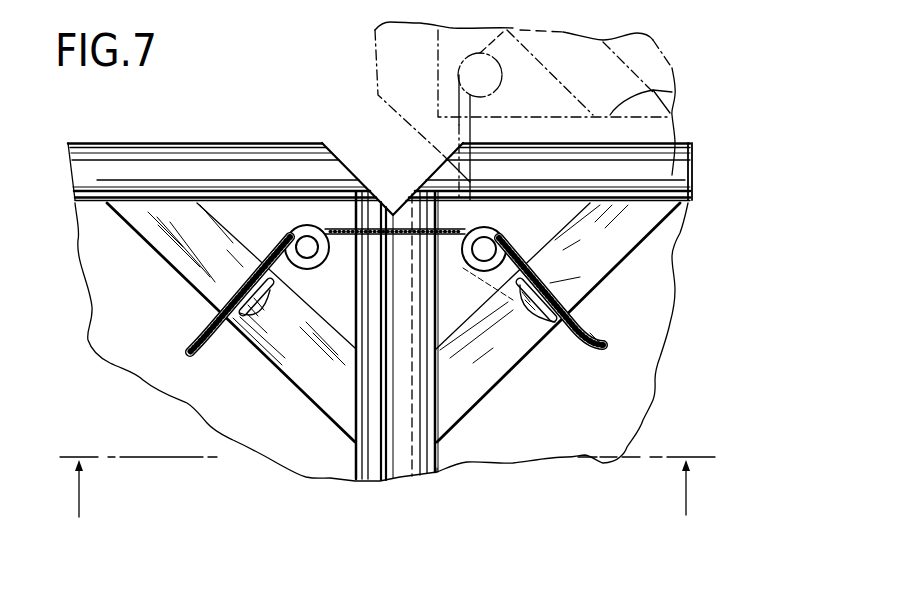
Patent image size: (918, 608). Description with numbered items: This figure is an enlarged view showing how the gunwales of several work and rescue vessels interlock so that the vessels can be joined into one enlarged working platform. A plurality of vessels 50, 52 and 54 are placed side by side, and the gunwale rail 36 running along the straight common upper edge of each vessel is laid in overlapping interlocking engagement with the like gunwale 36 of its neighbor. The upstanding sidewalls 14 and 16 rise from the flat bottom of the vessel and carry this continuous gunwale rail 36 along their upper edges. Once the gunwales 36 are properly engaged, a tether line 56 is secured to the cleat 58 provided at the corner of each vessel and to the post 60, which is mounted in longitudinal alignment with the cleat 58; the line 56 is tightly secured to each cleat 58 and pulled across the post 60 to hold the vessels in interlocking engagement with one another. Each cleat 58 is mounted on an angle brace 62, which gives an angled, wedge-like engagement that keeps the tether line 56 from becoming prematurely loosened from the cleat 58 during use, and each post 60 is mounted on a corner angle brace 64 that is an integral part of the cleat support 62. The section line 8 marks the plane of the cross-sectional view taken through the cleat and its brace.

The section line 8- 8 is at (387, 471).
The sidewall 14 is at (443, 468).
The sidewall 16 is at (672, 92).
The gunwale rail 36 is at (380, 470).
The vessel 50 is at (124, 134).
The vessel 52 is at (661, 405).
The vessel 54 is at (675, 51).
The tether line 56 is at (590, 333).
The cleat 58 is at (233, 322).
The post 60 is at (293, 233).
The angle brace 62 is at (478, 380).
The corner angle brace 64 is at (337, 317).